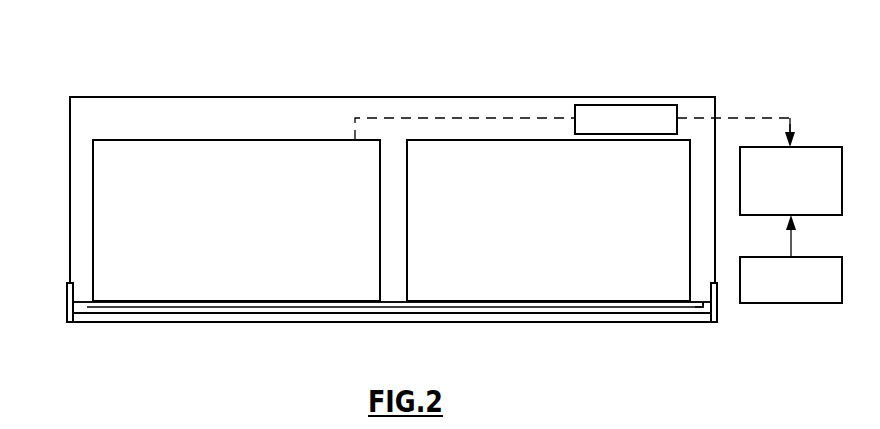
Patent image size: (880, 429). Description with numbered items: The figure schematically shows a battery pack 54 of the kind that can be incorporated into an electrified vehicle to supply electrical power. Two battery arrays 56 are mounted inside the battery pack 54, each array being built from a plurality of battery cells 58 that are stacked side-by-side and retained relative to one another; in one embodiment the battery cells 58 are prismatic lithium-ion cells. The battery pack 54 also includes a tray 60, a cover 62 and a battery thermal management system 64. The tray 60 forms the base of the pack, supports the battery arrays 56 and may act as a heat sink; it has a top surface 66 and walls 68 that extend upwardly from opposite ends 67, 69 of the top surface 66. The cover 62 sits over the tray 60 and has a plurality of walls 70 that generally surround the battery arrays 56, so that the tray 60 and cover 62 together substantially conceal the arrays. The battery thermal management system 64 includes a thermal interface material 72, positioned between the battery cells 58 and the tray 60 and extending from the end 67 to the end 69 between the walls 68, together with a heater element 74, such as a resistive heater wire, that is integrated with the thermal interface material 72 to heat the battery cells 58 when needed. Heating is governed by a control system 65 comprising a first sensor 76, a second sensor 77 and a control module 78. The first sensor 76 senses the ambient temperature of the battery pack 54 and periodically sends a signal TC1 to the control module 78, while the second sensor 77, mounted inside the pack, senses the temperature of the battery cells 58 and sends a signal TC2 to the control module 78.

The battery pack 54 is at (441, 202).
The battery array 56 is at (206, 128).
The battery cell 58 is at (251, 233).
The tray 60 is at (356, 334).
The cover 62 is at (92, 88).
The battery thermal management system 64 is at (527, 325).
The control system 65 is at (751, 106).
The top surface 66 is at (434, 306).
The end 67 is at (69, 335).
The walls 68 is at (67, 299).
The end 69 is at (718, 335).
The walls 70 is at (70, 200).
The thermal interface material 72 is at (702, 310).
The heater element 74 is at (600, 308).
The first sensor 76 is at (802, 303).
The second sensor 77 is at (627, 105).
The control module 78 is at (818, 147).
The signal TC1 is at (792, 250).
The signal TC2 is at (790, 125).